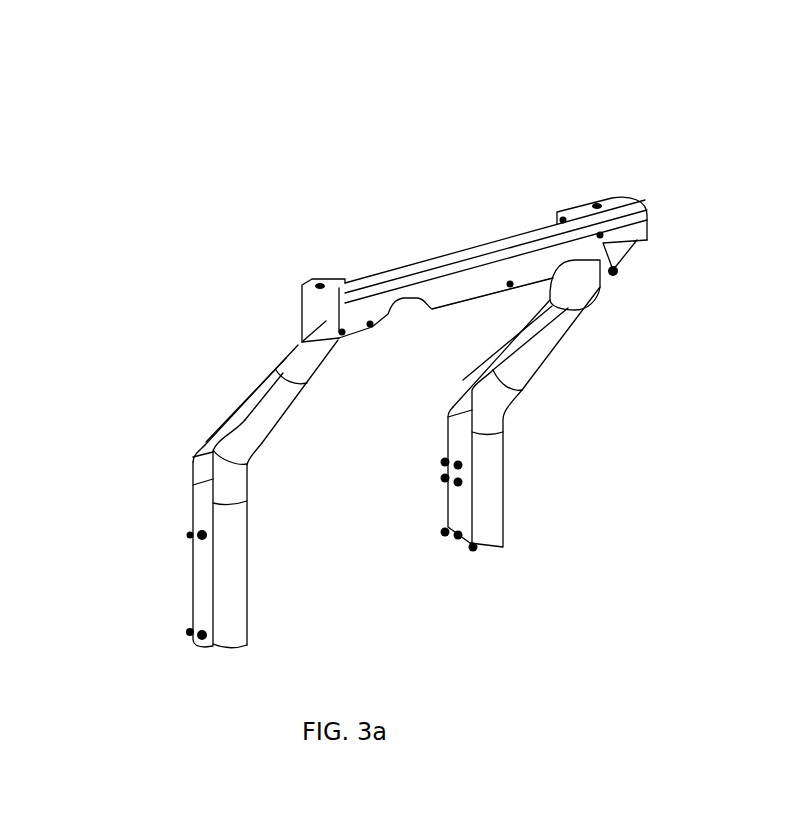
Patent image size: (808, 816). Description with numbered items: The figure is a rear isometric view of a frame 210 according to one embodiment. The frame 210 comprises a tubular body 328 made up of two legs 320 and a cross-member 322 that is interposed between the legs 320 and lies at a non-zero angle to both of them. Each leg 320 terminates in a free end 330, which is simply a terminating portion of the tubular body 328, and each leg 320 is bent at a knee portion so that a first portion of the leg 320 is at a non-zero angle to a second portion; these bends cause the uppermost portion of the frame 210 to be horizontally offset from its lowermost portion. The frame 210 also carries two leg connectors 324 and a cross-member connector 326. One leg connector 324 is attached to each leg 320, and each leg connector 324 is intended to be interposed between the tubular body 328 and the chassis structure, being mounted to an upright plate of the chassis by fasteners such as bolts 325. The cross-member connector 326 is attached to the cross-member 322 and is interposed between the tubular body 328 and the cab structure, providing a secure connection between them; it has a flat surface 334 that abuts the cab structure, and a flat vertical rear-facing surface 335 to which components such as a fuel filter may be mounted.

The frame 210 is at (387, 117).
The flat surface 334 is at (613, 208).
The cross-member connector 326 is at (661, 224).
The flat vertical rear-facing surface 335 is at (500, 275).
The cross-member 322 is at (393, 312).
The leg connector 324 is at (211, 465).
The bolt 325 is at (200, 535).
The free end 330 is at (235, 645).
The leg 320 is at (547, 333).
The tubular body 328 is at (515, 432).